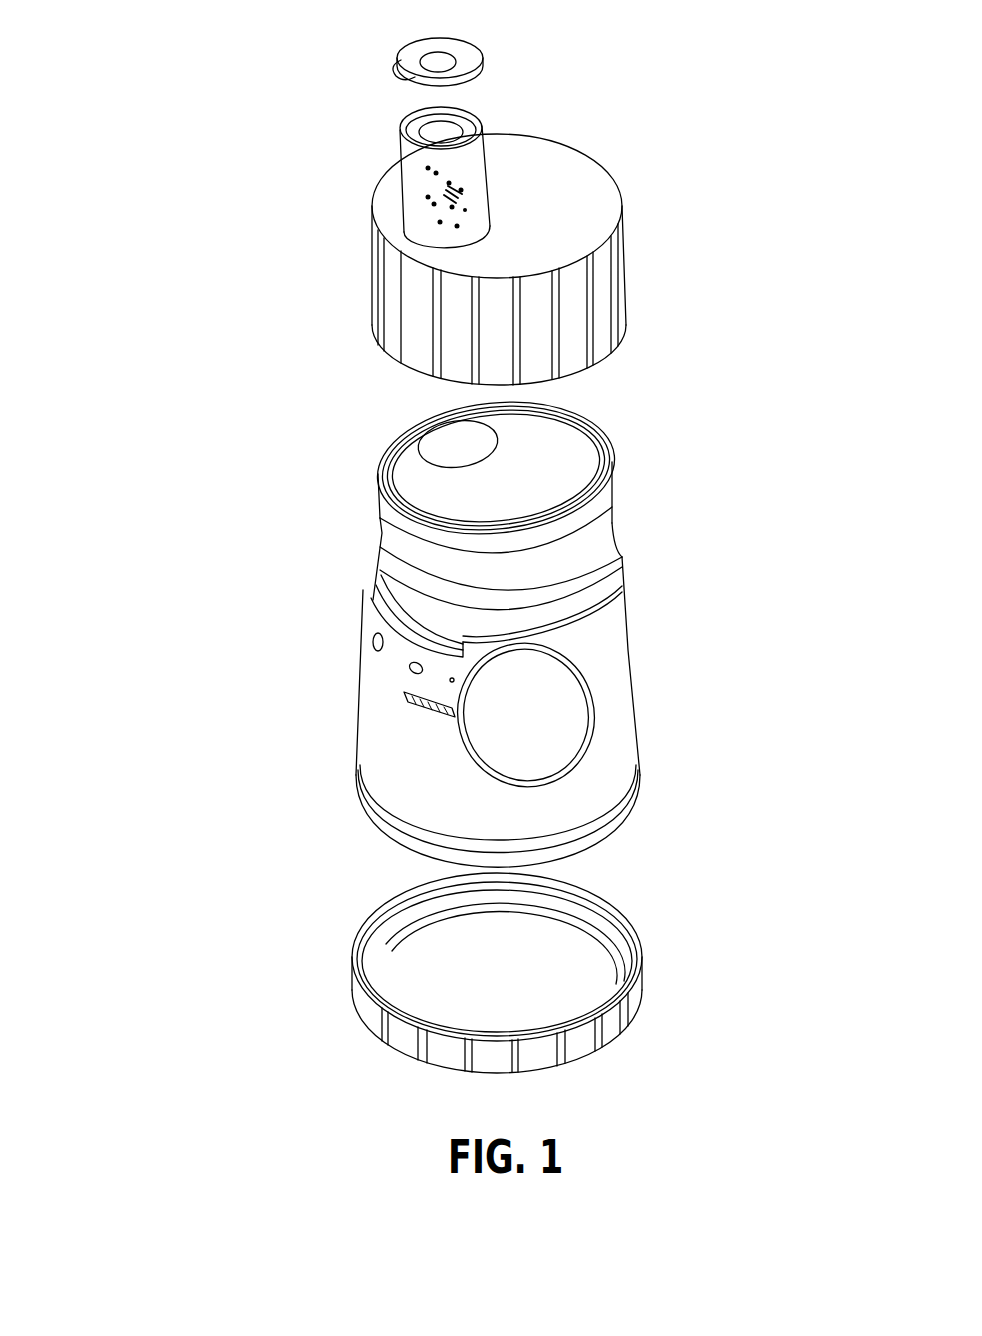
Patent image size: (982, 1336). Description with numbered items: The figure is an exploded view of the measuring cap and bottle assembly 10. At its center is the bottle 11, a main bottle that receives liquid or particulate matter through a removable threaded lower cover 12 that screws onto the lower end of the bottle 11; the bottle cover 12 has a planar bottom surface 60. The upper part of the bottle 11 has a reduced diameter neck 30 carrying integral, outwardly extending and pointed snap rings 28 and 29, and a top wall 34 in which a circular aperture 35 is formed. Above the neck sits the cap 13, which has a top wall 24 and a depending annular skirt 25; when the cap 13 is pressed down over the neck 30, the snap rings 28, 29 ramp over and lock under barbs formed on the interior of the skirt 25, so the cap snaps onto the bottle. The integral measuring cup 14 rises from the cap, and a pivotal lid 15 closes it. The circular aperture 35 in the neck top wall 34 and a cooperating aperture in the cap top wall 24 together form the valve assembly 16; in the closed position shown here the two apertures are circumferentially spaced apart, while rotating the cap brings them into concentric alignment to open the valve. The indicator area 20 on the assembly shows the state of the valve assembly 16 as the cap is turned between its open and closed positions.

The measuring cap and bottle assembly 10 is at (271, 664).
The bottle 11 is at (635, 665).
The lower cover 12 is at (352, 1000).
The cap 13 is at (627, 257).
The measuring cup 14 is at (400, 182).
The pivotal lid 15 is at (404, 57).
The valve assembly 16 is at (348, 378).
The indicator area 20 is at (356, 599).
The top wall 24 is at (550, 175).
The annular skirt 25 is at (627, 297).
The snap ring 28 is at (613, 497).
The snap ring 29 is at (622, 556).
The neck 30 is at (380, 528).
The top wall 34 is at (555, 468).
The circular aperture 35 is at (494, 432).
The planar bottom surface 60 is at (437, 983).